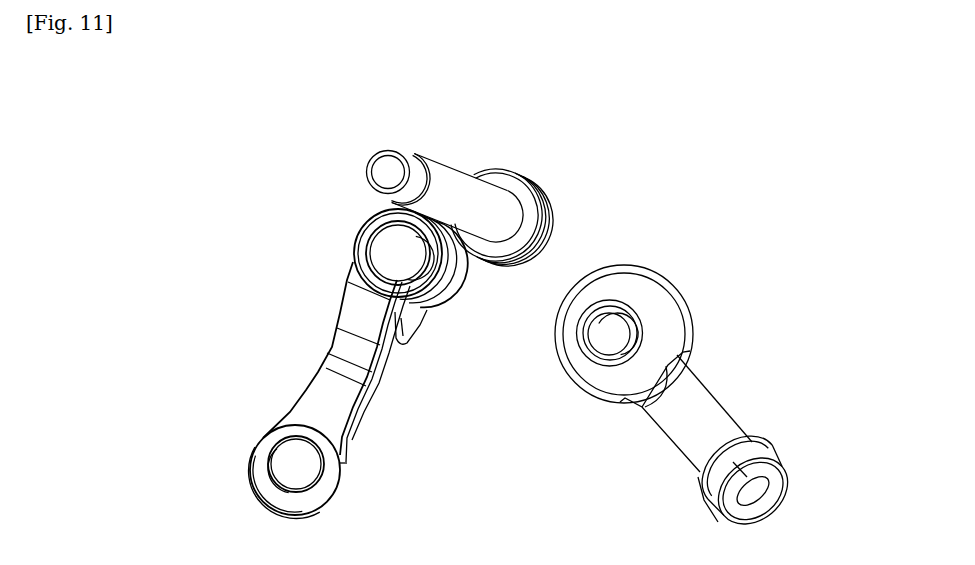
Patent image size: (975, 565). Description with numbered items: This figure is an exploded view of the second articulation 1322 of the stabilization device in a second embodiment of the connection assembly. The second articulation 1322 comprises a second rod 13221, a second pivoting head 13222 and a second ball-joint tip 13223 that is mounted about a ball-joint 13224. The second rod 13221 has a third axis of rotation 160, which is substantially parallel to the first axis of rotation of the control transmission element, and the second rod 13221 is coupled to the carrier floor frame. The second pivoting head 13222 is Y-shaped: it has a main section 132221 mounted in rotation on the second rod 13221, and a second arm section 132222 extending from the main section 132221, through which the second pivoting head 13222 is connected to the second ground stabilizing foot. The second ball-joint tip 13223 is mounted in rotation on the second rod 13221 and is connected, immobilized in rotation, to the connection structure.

The second articulation 1322 is at (792, 150).
The third axis of rotation 160 is at (378, 172).
The second rod 13221 is at (669, 180).
The second pivoting head 13222 is at (394, 403).
The main section 132221 is at (372, 212).
The second arm section 132222 is at (302, 398).
The second ball-joint tip 13223 is at (730, 364).
The ball-joint 13224 is at (637, 310).